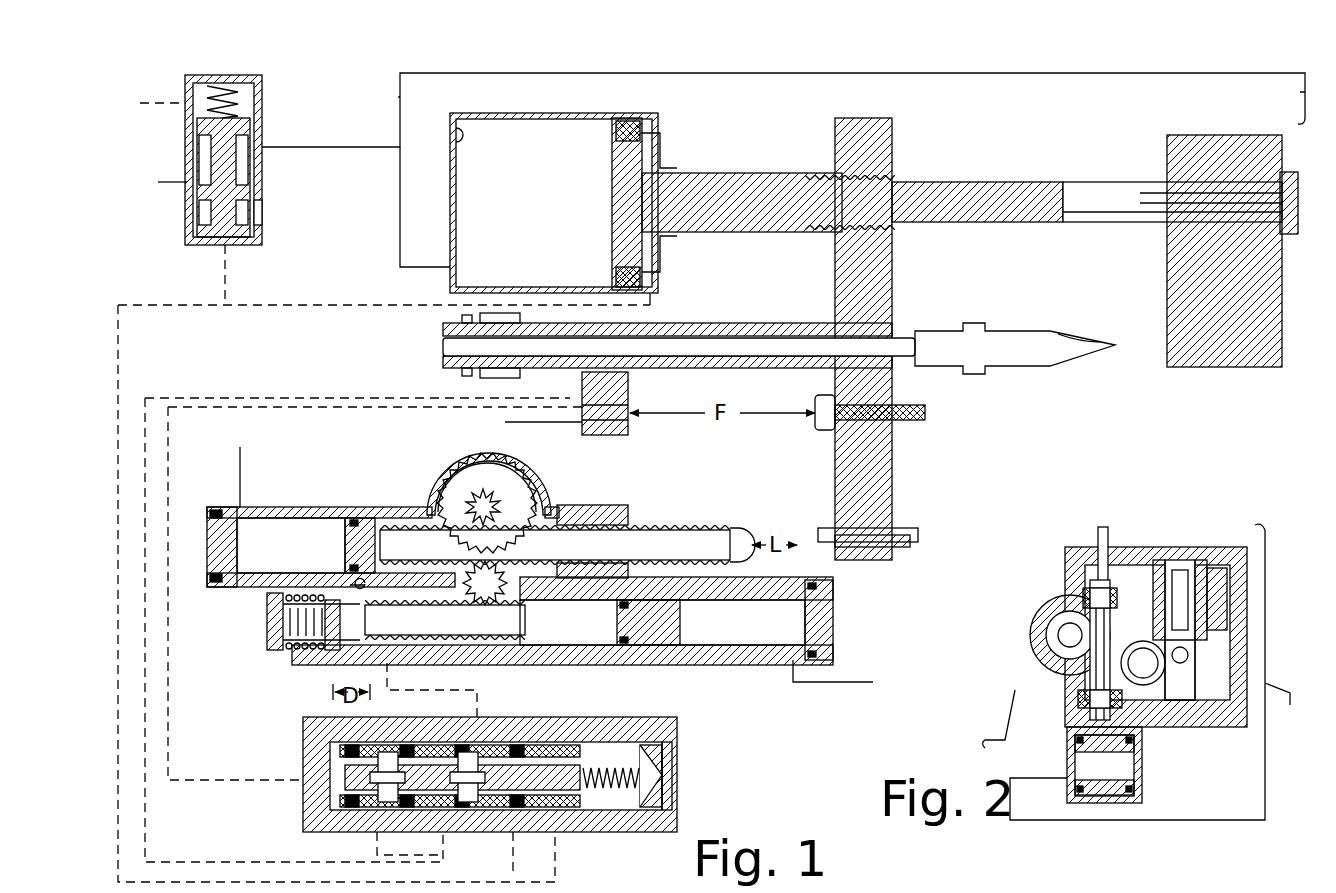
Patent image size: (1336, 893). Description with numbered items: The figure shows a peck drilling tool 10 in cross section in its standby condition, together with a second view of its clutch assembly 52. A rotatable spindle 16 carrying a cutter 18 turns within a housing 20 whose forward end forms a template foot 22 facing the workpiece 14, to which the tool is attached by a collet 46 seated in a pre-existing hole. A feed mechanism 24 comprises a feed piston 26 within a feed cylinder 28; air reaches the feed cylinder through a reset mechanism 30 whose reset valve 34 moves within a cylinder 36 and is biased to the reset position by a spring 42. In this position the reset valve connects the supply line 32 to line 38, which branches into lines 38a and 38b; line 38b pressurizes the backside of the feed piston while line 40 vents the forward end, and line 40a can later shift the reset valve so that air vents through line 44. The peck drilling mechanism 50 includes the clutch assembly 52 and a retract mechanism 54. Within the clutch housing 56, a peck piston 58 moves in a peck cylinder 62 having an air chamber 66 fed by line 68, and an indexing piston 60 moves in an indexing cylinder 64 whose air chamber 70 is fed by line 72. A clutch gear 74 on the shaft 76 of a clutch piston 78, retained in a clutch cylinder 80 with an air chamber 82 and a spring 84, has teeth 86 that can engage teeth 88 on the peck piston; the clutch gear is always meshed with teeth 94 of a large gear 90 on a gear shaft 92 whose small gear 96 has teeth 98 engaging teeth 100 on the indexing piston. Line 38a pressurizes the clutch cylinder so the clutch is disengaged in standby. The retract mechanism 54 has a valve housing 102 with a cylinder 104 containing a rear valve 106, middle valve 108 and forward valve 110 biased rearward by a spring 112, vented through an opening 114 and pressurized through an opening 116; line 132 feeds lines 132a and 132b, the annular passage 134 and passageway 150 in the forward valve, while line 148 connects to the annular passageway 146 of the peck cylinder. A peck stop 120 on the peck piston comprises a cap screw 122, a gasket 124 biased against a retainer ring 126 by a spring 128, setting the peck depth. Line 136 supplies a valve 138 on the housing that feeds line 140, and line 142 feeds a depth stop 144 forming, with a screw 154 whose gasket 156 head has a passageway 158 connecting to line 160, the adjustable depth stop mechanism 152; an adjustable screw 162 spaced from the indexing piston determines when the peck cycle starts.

In FIG. 1, the peck drilling tool 10 is at (1091, 139).
In FIG. 1, the workpiece 14 is at (1265, 270).
In FIG. 1, the spindle 16 is at (901, 340).
In FIG. 1, the cutter 18 is at (1010, 340).
In FIG. 1, the housing 20 is at (725, 325).
In FIG. 1, the template foot 22 is at (897, 460).
In FIG. 1, the feed mechanism 24 is at (605, 190).
In FIG. 1, the feed piston 26 is at (611, 207).
In FIG. 1, the feed cylinder 28 is at (453, 135).
In FIG. 1, the reset mechanism 30 is at (218, 163).
In FIG. 1, the line 32 is at (173, 183).
In FIG. 1, the reset valve 34 is at (232, 170).
In FIG. 1, the cylinder 36 is at (263, 214).
In FIG. 1, the line 38 is at (356, 146).
In FIG. 1, the line 38a is at (398, 97).
In FIG. 2, the line 38a is at (1168, 672).
In FIG. 1, the line 38b is at (399, 222).
In FIG. 1, the line 40 is at (260, 302).
In FIG. 1, the line 40a is at (223, 272).
In FIG. 1, the spring 42 is at (258, 97).
In FIG. 1, the line 44 is at (173, 104).
In FIG. 1, the collet 46 is at (1080, 190).
In FIG. 1, the peck drilling mechanism 50 is at (240, 724).
In FIG. 1, the clutch assembly 52 is at (622, 626).
In FIG. 2, the clutch assembly 52 is at (1162, 521).
In FIG. 1, the retract mechanism 54 is at (507, 782).
In FIG. 1, the clutch housing 56 is at (462, 466).
In FIG. 2, the clutch housing 56 is at (1064, 552).
In FIG. 1, the peck piston 58 is at (681, 631).
In FIG. 2, the peck piston 58 is at (1062, 640).
In FIG. 1, the indexing piston 60 is at (340, 517).
In FIG. 2, the indexing piston 60 is at (1140, 668).
In FIG. 1, the peck cylinder 62 is at (762, 645).
In FIG. 1, the indexing cylinder 64 is at (284, 518).
In FIG. 1, the air chamber 66 is at (758, 630).
In FIG. 1, the line 68 is at (835, 683).
In FIG. 2, the line 68 is at (999, 717).
In FIG. 1, the air chamber 70 is at (292, 525).
In FIG. 1, the line 72 is at (236, 462).
In FIG. 1, the clutch gear 74 is at (478, 602).
In FIG. 2, the clutch gear 74 is at (1092, 590).
In FIG. 2, the shaft 76 is at (1110, 530).
In FIG. 2, the clutch piston 78 is at (1140, 737).
In FIG. 2, the clutch cylinder 80 is at (1102, 765).
In FIG. 2, the air chamber 82 is at (1120, 767).
In FIG. 2, the spring 84 is at (1080, 702).
In FIG. 1, the teeth 86 is at (521, 589).
In FIG. 2, the teeth 86 is at (1082, 597).
In FIG. 1, the teeth 88 is at (432, 628).
In FIG. 1, the large gear 90 is at (520, 490).
In FIG. 2, the large gear 90 is at (1222, 597).
In FIG. 2, the gear shaft 92 is at (1182, 570).
In FIG. 1, the teeth 94 is at (470, 462).
In FIG. 2, the teeth 94 is at (1233, 615).
In FIG. 1, the small gear 96 is at (505, 498).
In FIG. 2, the small gear 96 is at (1190, 670).
In FIG. 1, the teeth 98 is at (453, 506).
In FIG. 2, the teeth 98 is at (1205, 655).
In FIG. 1, the teeth 100 is at (660, 566).
In FIG. 1, the valve housing 102 is at (305, 718).
In FIG. 1, the cylinder 104 is at (622, 805).
In FIG. 1, the rear valve 106 is at (340, 766).
In FIG. 1, the middle valve 108 is at (385, 765).
In FIG. 1, the forward valve 110 is at (533, 760).
In FIG. 1, the spring 112 is at (617, 762).
In FIG. 1, the opening 114 is at (655, 782).
In FIG. 1, the opening 116 is at (312, 790).
In FIG. 1, the peck stop 120 is at (305, 635).
In FIG. 1, the cap screw 122 is at (268, 641).
In FIG. 1, the gasket 124 is at (330, 648).
In FIG. 1, the retainer ring 126 is at (343, 645).
In FIG. 1, the spring 128 is at (276, 597).
In FIG. 1, the line 132 is at (513, 870).
In FIG. 1, the line 132a is at (513, 842).
In FIG. 1, the line 132b is at (378, 845).
In FIG. 1, the annular passage 134 is at (563, 800).
In FIG. 1, the line 136 is at (440, 318).
In FIG. 1, the valve 138 is at (466, 373).
In FIG. 1, the line 140 is at (320, 398).
In FIG. 1, the line 142 is at (528, 423).
In FIG. 1, the depth stop 144 is at (630, 392).
In FIG. 1, the annular passageway 146 is at (355, 585).
In FIG. 1, the line 148 is at (480, 690).
In FIG. 1, the passageway 150 is at (398, 762).
In FIG. 1, the adjustable depth stop mechanism 152 is at (909, 479).
In FIG. 1, the screw 154 is at (927, 413).
In FIG. 1, the gasket 156 is at (836, 445).
In FIG. 1, the passageway 158 is at (818, 428).
In FIG. 1, the line 160 is at (516, 407).
In FIG. 1, the adjustable screw 162 is at (910, 540).